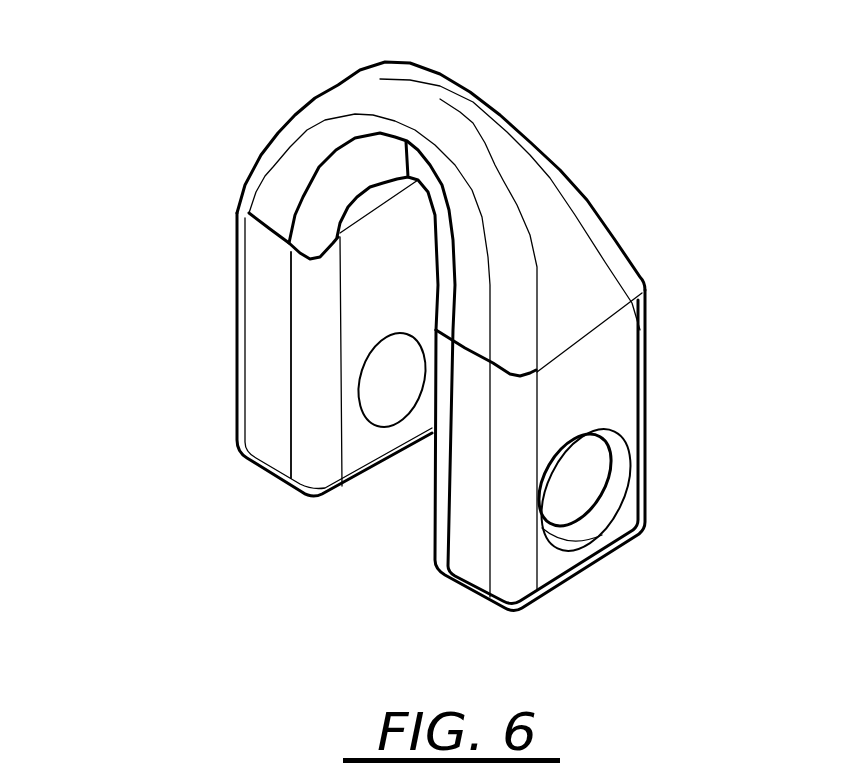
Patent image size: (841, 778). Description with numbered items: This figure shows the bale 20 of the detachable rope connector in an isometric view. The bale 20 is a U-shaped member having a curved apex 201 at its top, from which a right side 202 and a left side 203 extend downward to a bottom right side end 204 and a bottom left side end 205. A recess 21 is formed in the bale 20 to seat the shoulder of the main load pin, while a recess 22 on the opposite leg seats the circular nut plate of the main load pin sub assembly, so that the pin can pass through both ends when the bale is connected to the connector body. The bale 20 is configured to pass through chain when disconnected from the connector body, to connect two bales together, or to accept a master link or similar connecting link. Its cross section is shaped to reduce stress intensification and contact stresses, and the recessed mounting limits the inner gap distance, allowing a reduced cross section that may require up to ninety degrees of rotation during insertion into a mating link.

The bale 20 is at (456, 314).
The recess 21 is at (612, 455).
The recess 22 is at (202, 320).
The apex 201 is at (437, 65).
The right side 202 is at (593, 313).
The left side 203 is at (255, 160).
The bottom right side end 204 is at (653, 502).
The bottom left side end 205 is at (232, 435).